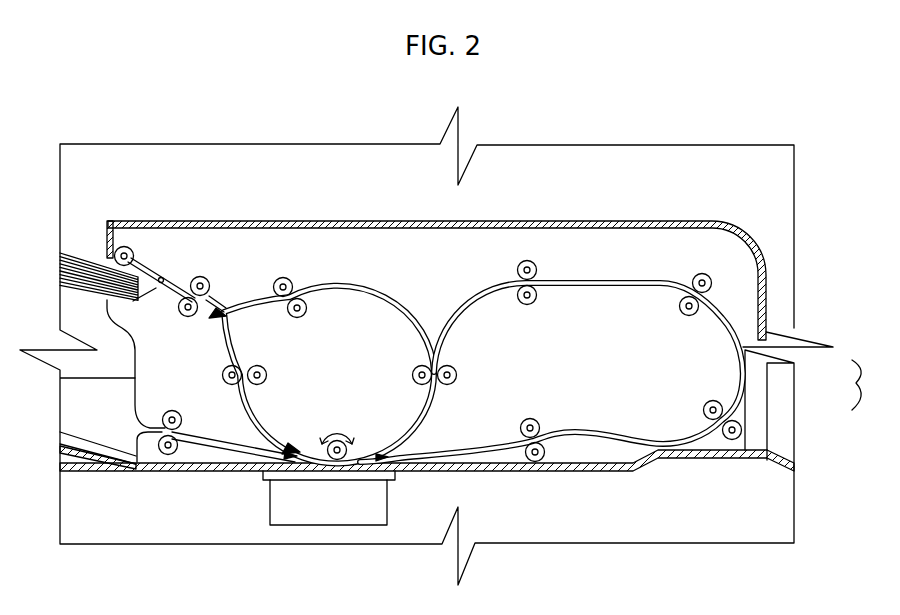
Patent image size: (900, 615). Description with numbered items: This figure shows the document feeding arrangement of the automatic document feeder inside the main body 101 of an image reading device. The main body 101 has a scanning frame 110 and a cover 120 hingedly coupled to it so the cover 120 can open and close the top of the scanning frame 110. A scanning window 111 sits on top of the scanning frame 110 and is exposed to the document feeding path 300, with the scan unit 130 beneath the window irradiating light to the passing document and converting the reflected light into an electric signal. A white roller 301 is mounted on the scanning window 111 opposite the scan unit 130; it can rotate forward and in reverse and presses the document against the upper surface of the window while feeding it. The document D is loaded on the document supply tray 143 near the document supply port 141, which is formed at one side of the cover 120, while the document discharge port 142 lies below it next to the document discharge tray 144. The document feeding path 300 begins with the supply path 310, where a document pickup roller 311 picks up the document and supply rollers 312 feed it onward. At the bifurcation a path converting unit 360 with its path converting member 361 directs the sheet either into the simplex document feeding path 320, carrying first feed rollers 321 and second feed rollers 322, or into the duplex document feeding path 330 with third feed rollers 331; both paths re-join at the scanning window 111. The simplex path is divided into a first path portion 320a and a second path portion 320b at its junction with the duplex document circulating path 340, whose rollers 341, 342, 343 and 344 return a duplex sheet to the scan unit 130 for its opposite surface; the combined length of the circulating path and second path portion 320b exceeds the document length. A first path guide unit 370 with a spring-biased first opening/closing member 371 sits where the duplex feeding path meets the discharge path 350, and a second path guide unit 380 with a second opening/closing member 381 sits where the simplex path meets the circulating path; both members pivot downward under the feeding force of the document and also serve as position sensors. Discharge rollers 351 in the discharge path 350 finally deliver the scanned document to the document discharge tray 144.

The main body 101 is at (454, 346).
The scanning frame 110 is at (770, 448).
The scanning window 111 is at (360, 480).
The cover 120 is at (770, 332).
The scan unit 130 is at (270, 505).
The document supply port 141 is at (112, 272).
The document discharge port 142 is at (148, 430).
The document supply tray 143 is at (68, 292).
The document discharge tray 144 is at (60, 448).
The document D is at (60, 253).
The document feeding path 300 is at (400, 300).
The white roller 301 is at (337, 438).
The supply path 310 is at (168, 276).
The document pickup roller 311 is at (126, 246).
The supply rollers 312 is at (203, 276).
The simplex document feeding path 320 is at (383, 351).
The first path portion 320a is at (333, 284).
The second path portion 320b is at (436, 402).
The first feed rollers 321 is at (307, 312).
The second feed rollers 322 is at (412, 375).
The duplex document feeding path 330 is at (246, 408).
The third feed rollers 331 is at (265, 370).
The duplex document circulating path 340 is at (595, 286).
The roller 341 is at (538, 420).
The roller 342 is at (705, 402).
The roller 343 is at (686, 316).
The roller 344 is at (527, 306).
The discharge path 350 is at (218, 450).
The discharge rollers 351 is at (168, 410).
The path converting unit 360 is at (214, 316).
The path converting member 361 is at (230, 306).
The first path guide unit 370 is at (296, 447).
The first opening/closing member 371 is at (283, 440).
The second path guide unit 380 is at (404, 449).
The second opening/closing member 381 is at (380, 452).